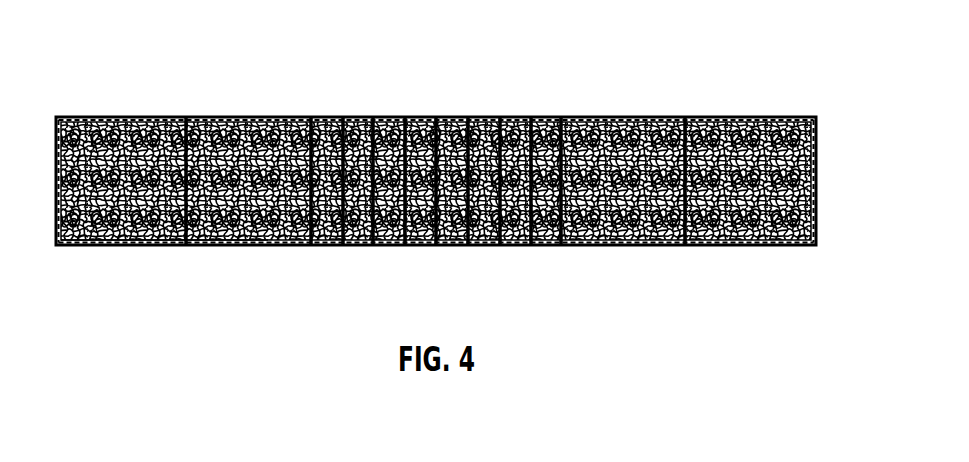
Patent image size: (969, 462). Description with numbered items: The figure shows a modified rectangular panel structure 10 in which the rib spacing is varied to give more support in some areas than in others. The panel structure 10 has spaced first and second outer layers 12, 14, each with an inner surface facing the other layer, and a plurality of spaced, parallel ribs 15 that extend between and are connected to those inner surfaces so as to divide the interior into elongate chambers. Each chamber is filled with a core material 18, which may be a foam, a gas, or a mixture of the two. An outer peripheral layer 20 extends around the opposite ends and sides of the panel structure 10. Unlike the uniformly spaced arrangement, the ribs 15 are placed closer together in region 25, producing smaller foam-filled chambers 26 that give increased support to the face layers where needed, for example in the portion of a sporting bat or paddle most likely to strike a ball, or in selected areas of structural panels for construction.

The panel structure 10 is at (130, 47).
The first outer layer 12 is at (237, 110).
The second outer layer 14 is at (428, 235).
The ribs 15 is at (303, 112).
The core material 18 is at (113, 235).
The outer peripheral layer 20 is at (807, 172).
The region of decreased rib spacing 25 is at (550, 98).
The smaller foam-filled chambers 26 is at (368, 233).